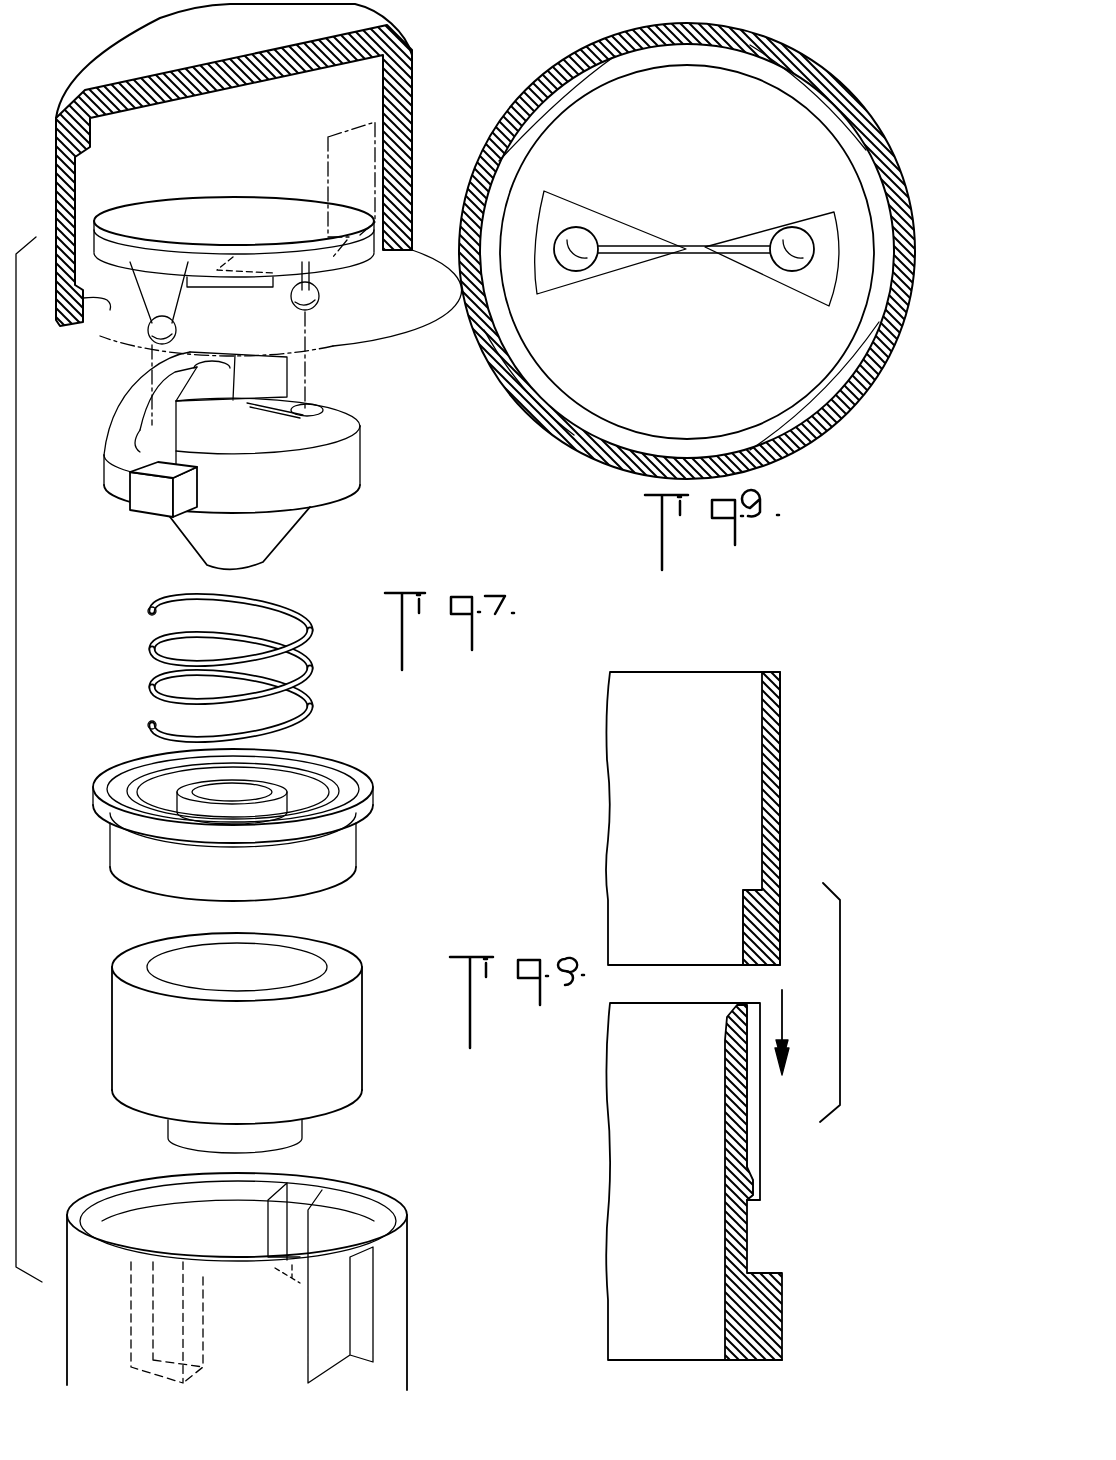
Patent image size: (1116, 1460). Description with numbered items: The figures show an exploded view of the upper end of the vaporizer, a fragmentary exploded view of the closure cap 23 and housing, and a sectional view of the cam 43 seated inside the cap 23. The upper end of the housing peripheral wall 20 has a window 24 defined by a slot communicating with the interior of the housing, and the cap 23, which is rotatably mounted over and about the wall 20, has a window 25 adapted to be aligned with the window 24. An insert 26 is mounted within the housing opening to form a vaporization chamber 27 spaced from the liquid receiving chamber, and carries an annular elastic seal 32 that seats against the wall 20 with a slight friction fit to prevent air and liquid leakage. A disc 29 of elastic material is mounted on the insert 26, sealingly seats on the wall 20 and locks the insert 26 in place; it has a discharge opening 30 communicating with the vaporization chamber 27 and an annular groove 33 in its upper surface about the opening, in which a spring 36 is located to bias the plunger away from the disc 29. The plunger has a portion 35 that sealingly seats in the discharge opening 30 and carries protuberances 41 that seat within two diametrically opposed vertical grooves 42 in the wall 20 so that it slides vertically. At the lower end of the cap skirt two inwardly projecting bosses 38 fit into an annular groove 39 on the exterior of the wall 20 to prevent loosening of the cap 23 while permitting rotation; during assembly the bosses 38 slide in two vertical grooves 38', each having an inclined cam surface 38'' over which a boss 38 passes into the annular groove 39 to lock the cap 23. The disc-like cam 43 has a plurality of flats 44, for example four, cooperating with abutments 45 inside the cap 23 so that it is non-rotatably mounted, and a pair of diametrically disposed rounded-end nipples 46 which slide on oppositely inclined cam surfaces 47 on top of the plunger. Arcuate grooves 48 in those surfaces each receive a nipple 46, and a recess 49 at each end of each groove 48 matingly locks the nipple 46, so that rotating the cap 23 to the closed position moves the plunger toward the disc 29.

In FIG. 7, the housing peripheral wall 20 is at (407, 1264).
In FIG. 7, the closure cap 23 is at (77, 82).
In FIG. 9, the closure cap 23 is at (687, 251).
In FIG. 8, the closure cap 23 is at (785, 805).
In FIG. 7, the window 24 is at (375, 1300).
In FIG. 7, the window 25 is at (330, 178).
In FIG. 7, the insert 26 is at (345, 1027).
In FIG. 7, the vaporization chamber 27 is at (280, 955).
In FIG. 7, the disc 29 is at (350, 860).
In FIG. 7, the discharge opening 30 is at (268, 792).
In FIG. 7, the annular elastic seal 32 is at (360, 806).
In FIG. 7, the annular groove 33 is at (318, 793).
In FIG. 7, the portion of plunger 35 is at (272, 525).
In FIG. 7, the spring 36 is at (147, 615).
In FIG. 7, the bosses 38 is at (102, 320).
In FIG. 8, the bosses 38 is at (728, 927).
In FIG. 8, the vertical grooves 38' is at (785, 1086).
In FIG. 8, the inclined cam surface 38'' is at (788, 1192).
In FIG. 8, the annular groove 39 is at (748, 1252).
In FIG. 7, the protuberances 41 is at (143, 512).
In FIG. 7, the vertical grooves 42 is at (287, 1200).
In FIG. 7, the cam 43 is at (212, 210).
In FIG. 9, the cam 43 is at (817, 349).
In FIG. 7, the flats 44 is at (95, 212).
In FIG. 9, the flats 44 is at (774, 77).
In FIG. 7, the abutments 45 is at (90, 136).
In FIG. 9, the abutments 45 is at (557, 107).
In FIG. 7, the nipples 46 is at (177, 302).
In FIG. 9, the nipples 46 is at (577, 238).
In FIG. 7, the inclined cam surfaces 47 is at (130, 402).
In FIG. 7, the arcuate grooves 48 is at (137, 420).
In FIG. 7, the recess 49 is at (190, 365).